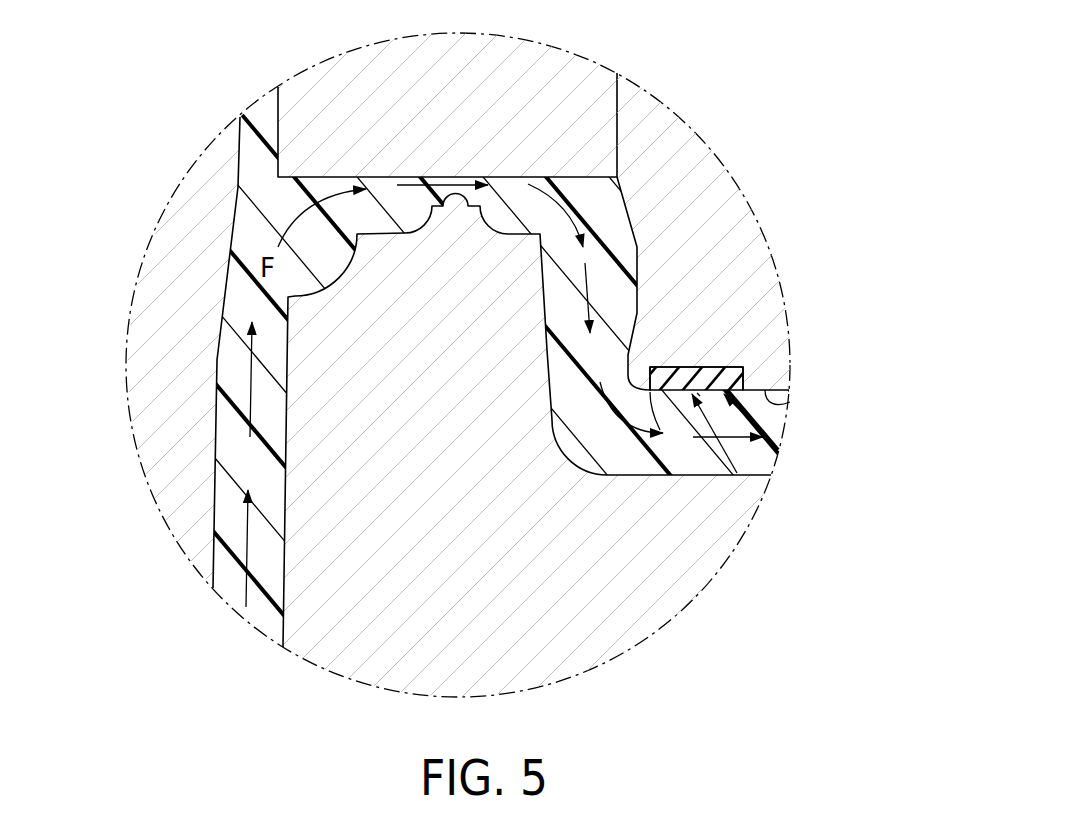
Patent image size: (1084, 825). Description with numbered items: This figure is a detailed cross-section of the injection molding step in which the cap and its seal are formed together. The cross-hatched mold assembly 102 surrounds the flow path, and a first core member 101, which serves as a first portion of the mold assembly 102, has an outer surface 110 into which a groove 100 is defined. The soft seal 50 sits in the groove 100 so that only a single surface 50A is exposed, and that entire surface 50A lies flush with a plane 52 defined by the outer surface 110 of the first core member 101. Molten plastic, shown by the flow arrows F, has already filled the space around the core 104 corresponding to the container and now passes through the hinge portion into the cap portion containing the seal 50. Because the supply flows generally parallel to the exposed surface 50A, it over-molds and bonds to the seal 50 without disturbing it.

The seal 50 is at (716, 388).
The surface 50A is at (758, 423).
The plane 52 is at (697, 393).
The groove 100 is at (745, 368).
The first core member 101 is at (712, 252).
The mold assembly 102 is at (488, 103).
The core 104 is at (197, 252).
The outer surface 110 is at (790, 404).